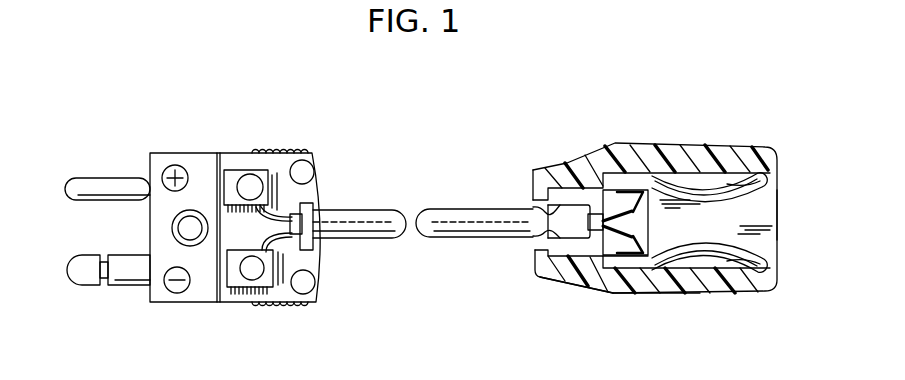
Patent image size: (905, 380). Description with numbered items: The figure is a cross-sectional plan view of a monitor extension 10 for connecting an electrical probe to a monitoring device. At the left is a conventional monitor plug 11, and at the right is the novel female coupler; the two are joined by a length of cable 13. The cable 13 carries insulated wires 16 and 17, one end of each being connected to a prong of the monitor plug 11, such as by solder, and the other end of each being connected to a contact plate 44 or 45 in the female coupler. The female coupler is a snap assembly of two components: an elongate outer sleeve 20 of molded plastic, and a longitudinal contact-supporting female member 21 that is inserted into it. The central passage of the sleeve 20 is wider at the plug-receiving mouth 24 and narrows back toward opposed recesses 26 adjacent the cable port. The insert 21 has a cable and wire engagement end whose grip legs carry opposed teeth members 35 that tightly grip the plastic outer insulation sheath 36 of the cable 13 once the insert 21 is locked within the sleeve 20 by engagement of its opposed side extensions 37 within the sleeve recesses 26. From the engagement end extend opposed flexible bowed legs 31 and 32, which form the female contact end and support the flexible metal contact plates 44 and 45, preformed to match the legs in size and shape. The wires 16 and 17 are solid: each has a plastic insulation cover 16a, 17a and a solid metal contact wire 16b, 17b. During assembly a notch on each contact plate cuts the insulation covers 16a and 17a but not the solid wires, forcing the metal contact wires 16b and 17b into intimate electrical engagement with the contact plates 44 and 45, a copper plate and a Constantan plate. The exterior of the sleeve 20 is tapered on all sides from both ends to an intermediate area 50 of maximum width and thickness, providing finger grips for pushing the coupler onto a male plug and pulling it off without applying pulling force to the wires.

The monitor extension 10 is at (349, 118).
The monitor plug 11 is at (183, 147).
The cable 13 is at (390, 210).
The insulated wire 16 is at (277, 207).
The insulated wire 17 is at (283, 238).
The plastic insulation cover 16a is at (590, 188).
The solid contact wire 16b is at (622, 192).
The plastic insulation cover 17a is at (597, 238).
The solid contact wire 17b is at (632, 240).
The outer sleeve 20 is at (700, 155).
The contact-supporting female member 21 is at (545, 244).
The mouth 24 is at (778, 213).
The opposed recesses 26 is at (538, 276).
The flexible bowed leg 31 is at (720, 178).
The flexible bowed leg 32 is at (723, 250).
The teeth members 35 is at (538, 212).
The outer insulation sheath 36 is at (448, 227).
The side extensions 37 is at (533, 256).
The contact plate 44 is at (772, 194).
The contact plate 45 is at (770, 260).
The intermediate area 50 is at (628, 296).